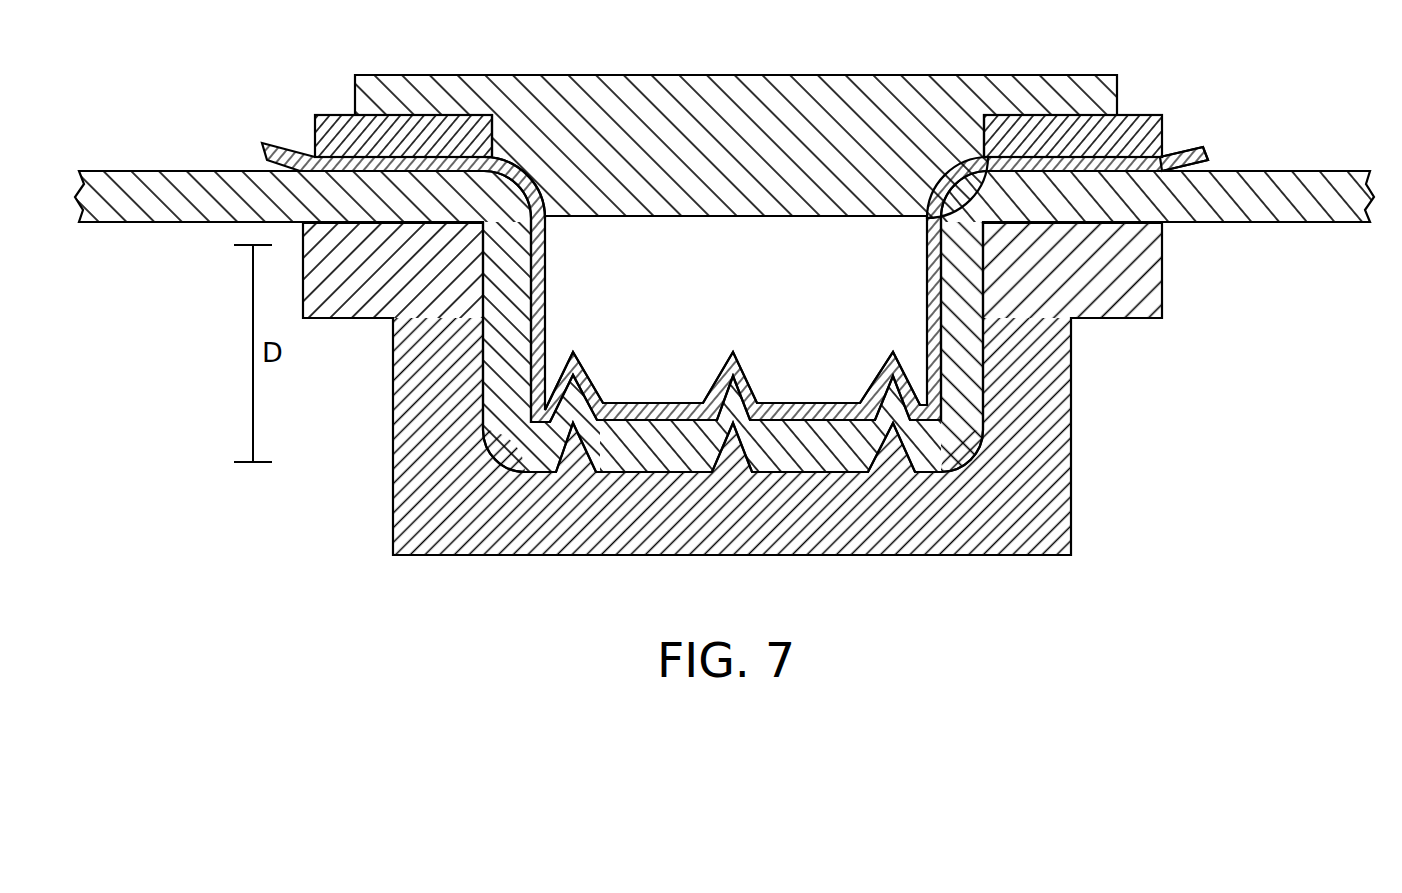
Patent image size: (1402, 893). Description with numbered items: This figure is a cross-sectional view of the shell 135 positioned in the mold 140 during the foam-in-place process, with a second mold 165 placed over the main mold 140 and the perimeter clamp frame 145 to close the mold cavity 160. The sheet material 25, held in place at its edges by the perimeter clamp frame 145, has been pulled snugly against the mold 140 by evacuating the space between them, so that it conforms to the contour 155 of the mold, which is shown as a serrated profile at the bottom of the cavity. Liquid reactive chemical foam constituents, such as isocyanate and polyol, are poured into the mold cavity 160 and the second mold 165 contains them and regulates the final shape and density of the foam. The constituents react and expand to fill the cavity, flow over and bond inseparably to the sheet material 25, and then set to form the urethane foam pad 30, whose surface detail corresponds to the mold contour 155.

The sheet material 25 is at (1205, 147).
The urethane foam pad 30 is at (563, 232).
The shell 135 is at (257, 120).
The mold 140 is at (1071, 493).
The perimeter clamp frame 145 is at (330, 113).
The contour 155 is at (548, 410).
The mold cavity 160 is at (653, 262).
The second mold 165 is at (692, 75).